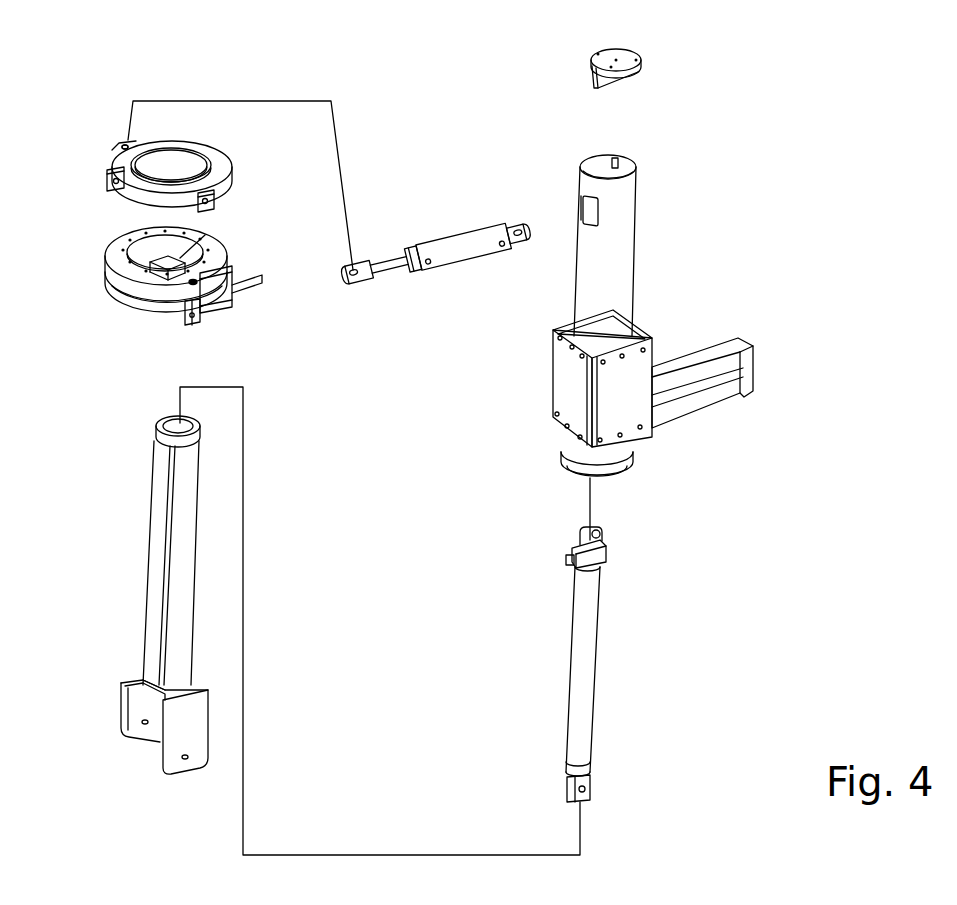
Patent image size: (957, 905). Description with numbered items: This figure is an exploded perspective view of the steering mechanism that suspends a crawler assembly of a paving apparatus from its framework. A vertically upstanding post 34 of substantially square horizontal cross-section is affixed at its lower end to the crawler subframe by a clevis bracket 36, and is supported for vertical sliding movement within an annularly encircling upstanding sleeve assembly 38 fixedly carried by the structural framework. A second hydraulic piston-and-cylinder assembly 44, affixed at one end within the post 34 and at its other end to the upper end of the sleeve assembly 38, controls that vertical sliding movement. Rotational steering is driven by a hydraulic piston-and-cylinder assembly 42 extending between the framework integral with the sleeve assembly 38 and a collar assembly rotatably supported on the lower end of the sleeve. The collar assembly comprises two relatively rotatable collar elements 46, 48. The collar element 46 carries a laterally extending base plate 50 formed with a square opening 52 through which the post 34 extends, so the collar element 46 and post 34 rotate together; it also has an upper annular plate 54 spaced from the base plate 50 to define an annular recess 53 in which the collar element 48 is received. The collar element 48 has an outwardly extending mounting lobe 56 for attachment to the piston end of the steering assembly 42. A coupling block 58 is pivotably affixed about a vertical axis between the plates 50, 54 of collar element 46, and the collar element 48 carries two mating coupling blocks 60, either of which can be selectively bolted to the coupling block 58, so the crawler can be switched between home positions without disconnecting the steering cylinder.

The post 34 is at (156, 585).
The clevis bracket 36 is at (176, 740).
The sleeve assembly 38 is at (617, 280).
The hydraulic piston-and-cylinder assembly 42 is at (483, 244).
The second hydraulic piston-and-cylinder assembly 44 is at (584, 675).
The collar element 46 is at (184, 289).
The collar element 48 is at (222, 160).
The base plate 50 is at (136, 291).
The square opening 52 is at (212, 239).
The annular recess 53 is at (214, 286).
The upper annular plate 54 is at (116, 246).
The mounting lobe 56 is at (113, 146).
The coupling block 58 is at (183, 302).
The mating coupling blocks 60 is at (110, 186).